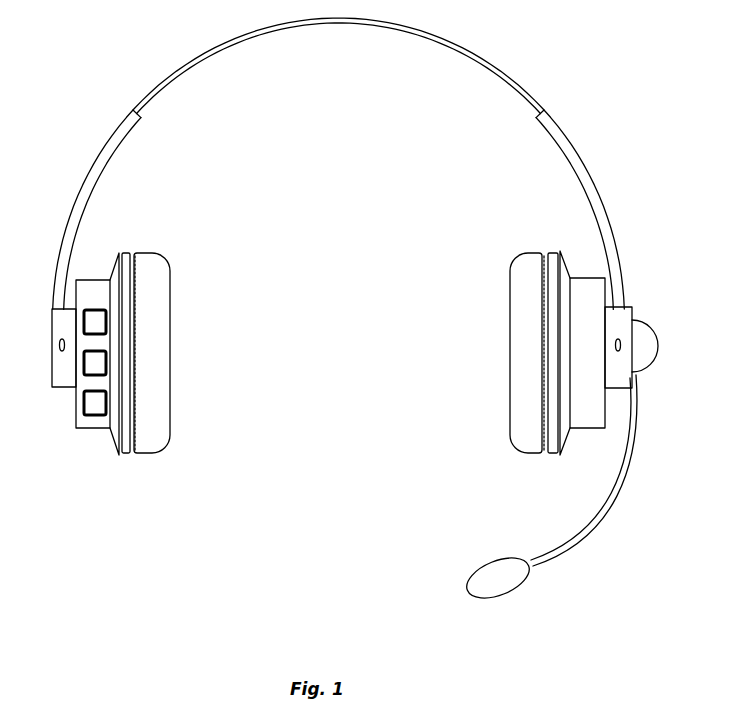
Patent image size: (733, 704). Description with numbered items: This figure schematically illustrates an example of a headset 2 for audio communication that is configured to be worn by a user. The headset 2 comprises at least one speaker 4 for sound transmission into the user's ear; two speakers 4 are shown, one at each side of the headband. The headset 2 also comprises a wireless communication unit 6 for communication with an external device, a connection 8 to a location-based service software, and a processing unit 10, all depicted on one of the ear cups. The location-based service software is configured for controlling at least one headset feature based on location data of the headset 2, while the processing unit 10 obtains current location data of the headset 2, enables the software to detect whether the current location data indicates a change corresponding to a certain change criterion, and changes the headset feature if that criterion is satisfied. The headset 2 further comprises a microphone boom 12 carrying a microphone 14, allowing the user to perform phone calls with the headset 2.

The headset 2 is at (125, 576).
The speaker 4 is at (153, 300).
The wireless communication unit 6 is at (90, 317).
The connection to a location-based service software 8 is at (88, 363).
The processing unit 10 is at (97, 402).
The microphone boom 12 is at (632, 420).
The microphone 14 is at (492, 573).